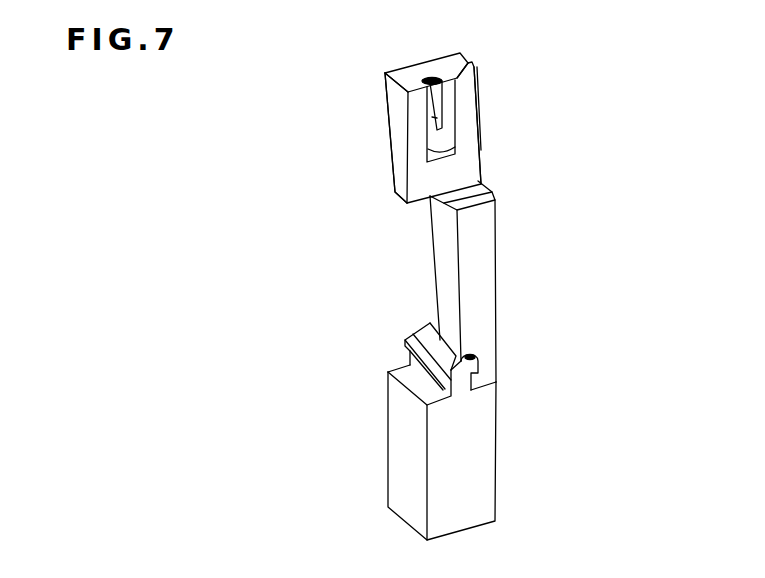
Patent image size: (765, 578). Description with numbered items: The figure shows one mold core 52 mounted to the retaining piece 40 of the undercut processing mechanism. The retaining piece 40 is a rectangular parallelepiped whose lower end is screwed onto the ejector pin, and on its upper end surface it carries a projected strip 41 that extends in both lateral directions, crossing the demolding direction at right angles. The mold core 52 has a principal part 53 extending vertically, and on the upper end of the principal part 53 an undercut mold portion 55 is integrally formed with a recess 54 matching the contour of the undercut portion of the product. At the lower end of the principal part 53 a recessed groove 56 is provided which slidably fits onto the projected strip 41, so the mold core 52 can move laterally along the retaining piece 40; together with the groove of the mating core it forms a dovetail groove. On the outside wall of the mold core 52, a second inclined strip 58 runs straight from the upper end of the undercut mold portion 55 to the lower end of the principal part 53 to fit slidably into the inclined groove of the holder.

The retaining piece 40 is at (381, 408).
The projected strip 41 is at (407, 333).
The mold core 52 is at (483, 113).
The principal part 53 is at (488, 292).
The recess 54 is at (433, 117).
The undercut mold portion 55 is at (384, 84).
The recessed groove 56 is at (479, 358).
The second inclined strip 58 is at (480, 175).